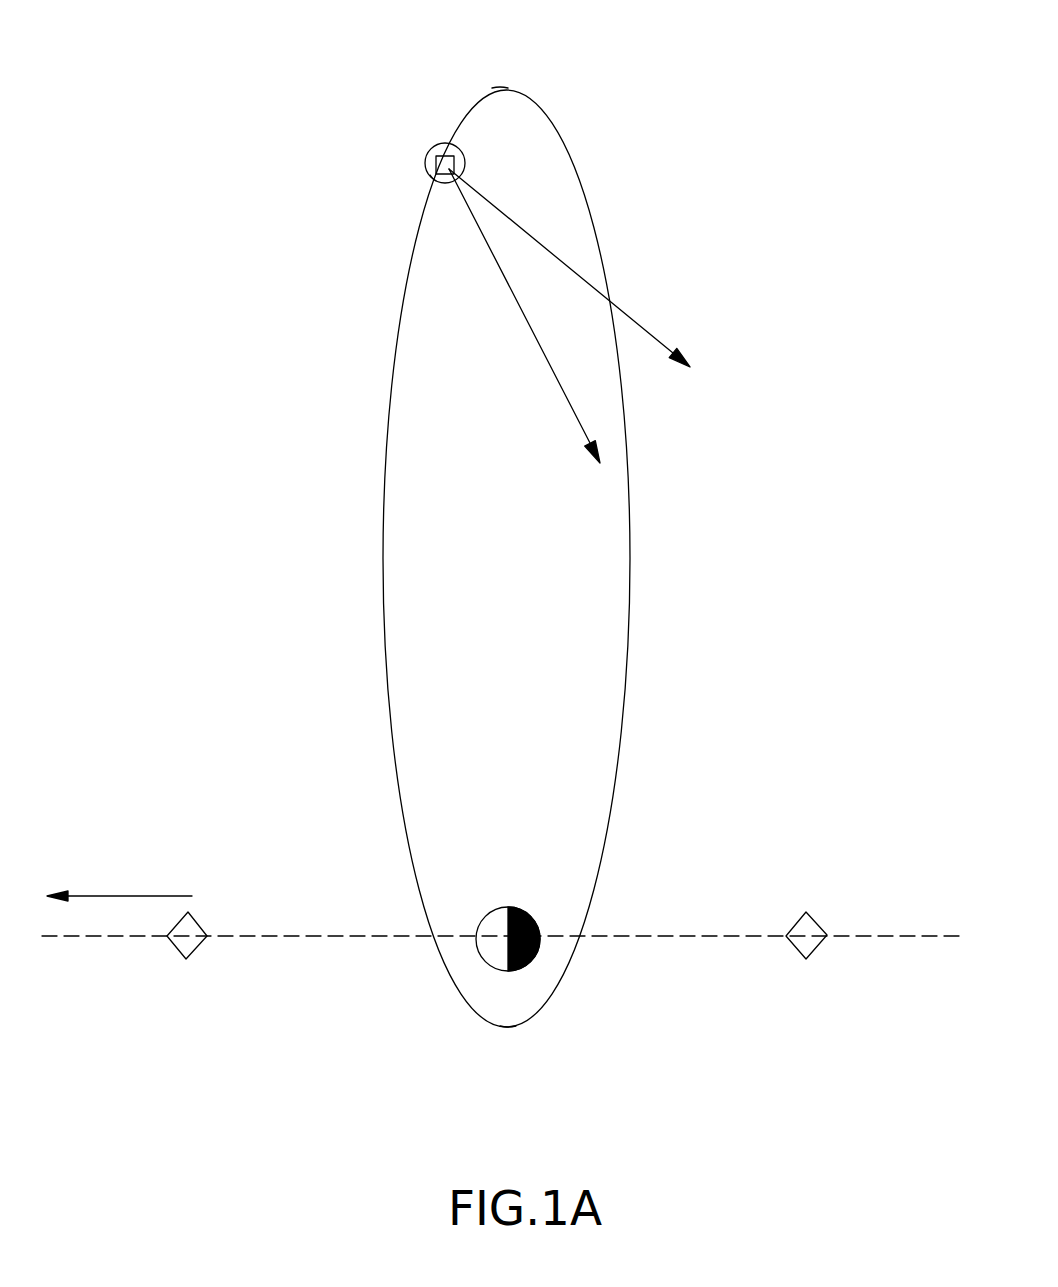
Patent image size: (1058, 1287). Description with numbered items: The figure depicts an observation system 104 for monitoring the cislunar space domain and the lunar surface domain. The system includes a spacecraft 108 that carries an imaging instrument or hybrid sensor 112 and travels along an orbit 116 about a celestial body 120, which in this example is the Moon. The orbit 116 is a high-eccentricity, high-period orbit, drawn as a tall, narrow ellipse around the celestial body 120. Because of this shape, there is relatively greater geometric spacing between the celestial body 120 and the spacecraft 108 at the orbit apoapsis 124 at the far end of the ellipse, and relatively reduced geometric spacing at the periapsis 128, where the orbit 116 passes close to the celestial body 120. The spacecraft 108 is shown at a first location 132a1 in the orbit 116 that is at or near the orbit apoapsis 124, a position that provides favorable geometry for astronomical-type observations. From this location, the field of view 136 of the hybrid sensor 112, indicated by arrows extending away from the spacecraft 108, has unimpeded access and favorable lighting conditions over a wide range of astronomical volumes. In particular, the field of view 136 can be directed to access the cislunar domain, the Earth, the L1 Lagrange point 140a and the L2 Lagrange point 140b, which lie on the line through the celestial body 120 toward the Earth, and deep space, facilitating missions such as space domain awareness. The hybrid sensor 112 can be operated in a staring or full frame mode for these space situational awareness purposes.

The observation system 104 is at (570, 108).
The spacecraft 108 is at (400, 128).
The hybrid sensor 112 is at (430, 164).
The orbit 116 is at (631, 496).
The celestial body 120 is at (484, 953).
The orbit apoapsis 124 is at (500, 87).
The periapsis 128 is at (508, 1030).
The first location 132a1 is at (437, 179).
The field of view 136 is at (650, 331).
The L1 Lagrange point 140a is at (177, 945).
The L2 Lagrange point 140b is at (817, 924).